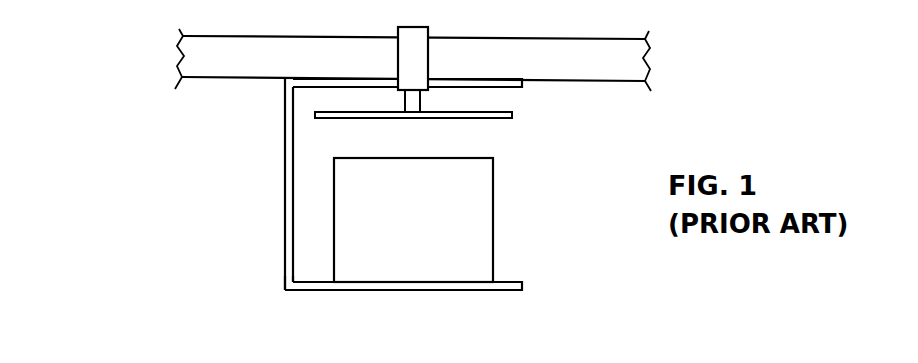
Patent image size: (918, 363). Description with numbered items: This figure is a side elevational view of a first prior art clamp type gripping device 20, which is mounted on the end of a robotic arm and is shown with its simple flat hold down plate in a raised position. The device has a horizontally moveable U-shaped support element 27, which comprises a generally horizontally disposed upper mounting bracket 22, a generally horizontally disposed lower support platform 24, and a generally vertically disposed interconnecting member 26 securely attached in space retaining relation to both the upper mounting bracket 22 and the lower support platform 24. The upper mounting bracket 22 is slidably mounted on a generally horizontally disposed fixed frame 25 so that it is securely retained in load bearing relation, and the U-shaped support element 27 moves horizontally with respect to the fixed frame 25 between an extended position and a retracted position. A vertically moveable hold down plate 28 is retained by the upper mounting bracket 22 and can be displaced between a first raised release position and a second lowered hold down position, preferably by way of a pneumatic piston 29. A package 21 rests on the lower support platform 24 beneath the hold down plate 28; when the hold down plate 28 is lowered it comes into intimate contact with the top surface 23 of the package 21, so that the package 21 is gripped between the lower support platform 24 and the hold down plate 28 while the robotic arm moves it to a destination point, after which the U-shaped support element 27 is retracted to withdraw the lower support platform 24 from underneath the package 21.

The clamp type gripping device 20 is at (124, 206).
The package 21 is at (493, 211).
The upper mounting bracket 22 is at (515, 88).
The top surface 23 is at (410, 157).
The lower support platform 24 is at (510, 291).
The fixed frame 25 is at (201, 79).
The interconnecting member 26 is at (284, 190).
The U-shaped support element 27 is at (284, 290).
The hold down plate 28 is at (510, 119).
The pneumatic piston 29 is at (428, 57).